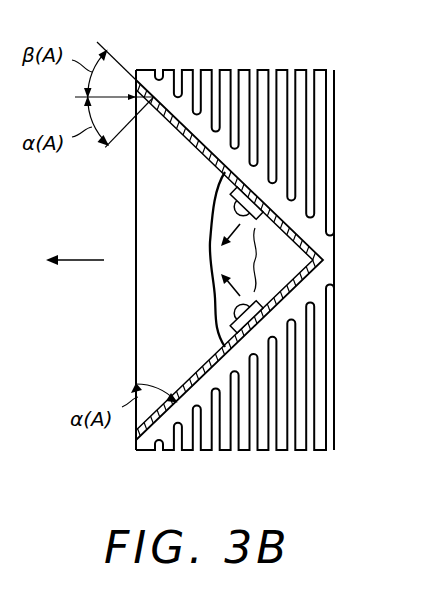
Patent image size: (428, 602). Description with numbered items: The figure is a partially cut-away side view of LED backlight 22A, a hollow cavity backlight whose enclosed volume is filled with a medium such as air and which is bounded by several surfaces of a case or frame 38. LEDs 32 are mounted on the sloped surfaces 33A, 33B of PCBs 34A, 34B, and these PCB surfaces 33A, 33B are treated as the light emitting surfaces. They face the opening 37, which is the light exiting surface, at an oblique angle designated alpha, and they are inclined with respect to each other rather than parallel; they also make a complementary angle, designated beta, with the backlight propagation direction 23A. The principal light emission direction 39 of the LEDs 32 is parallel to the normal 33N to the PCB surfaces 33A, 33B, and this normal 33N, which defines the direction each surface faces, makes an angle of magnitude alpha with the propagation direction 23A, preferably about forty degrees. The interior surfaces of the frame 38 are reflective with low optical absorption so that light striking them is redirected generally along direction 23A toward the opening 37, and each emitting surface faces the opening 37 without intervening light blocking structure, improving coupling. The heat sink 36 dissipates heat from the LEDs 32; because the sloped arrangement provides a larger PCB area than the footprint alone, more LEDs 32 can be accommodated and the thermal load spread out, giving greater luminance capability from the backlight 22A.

The LED backlight 22A is at (158, 47).
The backlight propagation direction 23A is at (84, 258).
The LEDs 32 is at (257, 258).
The sloped surface of PCB 33A is at (236, 206).
The sloped surface of PCB 33B is at (236, 315).
The normal to PCB surfaces 33N is at (101, 150).
The PCB 34A is at (236, 190).
The PCB 34B is at (236, 332).
The heat sink 36 is at (267, 70).
The opening 37 is at (110, 333).
The case or frame 38 is at (175, 272).
The principal light emission direction 39 is at (220, 239).